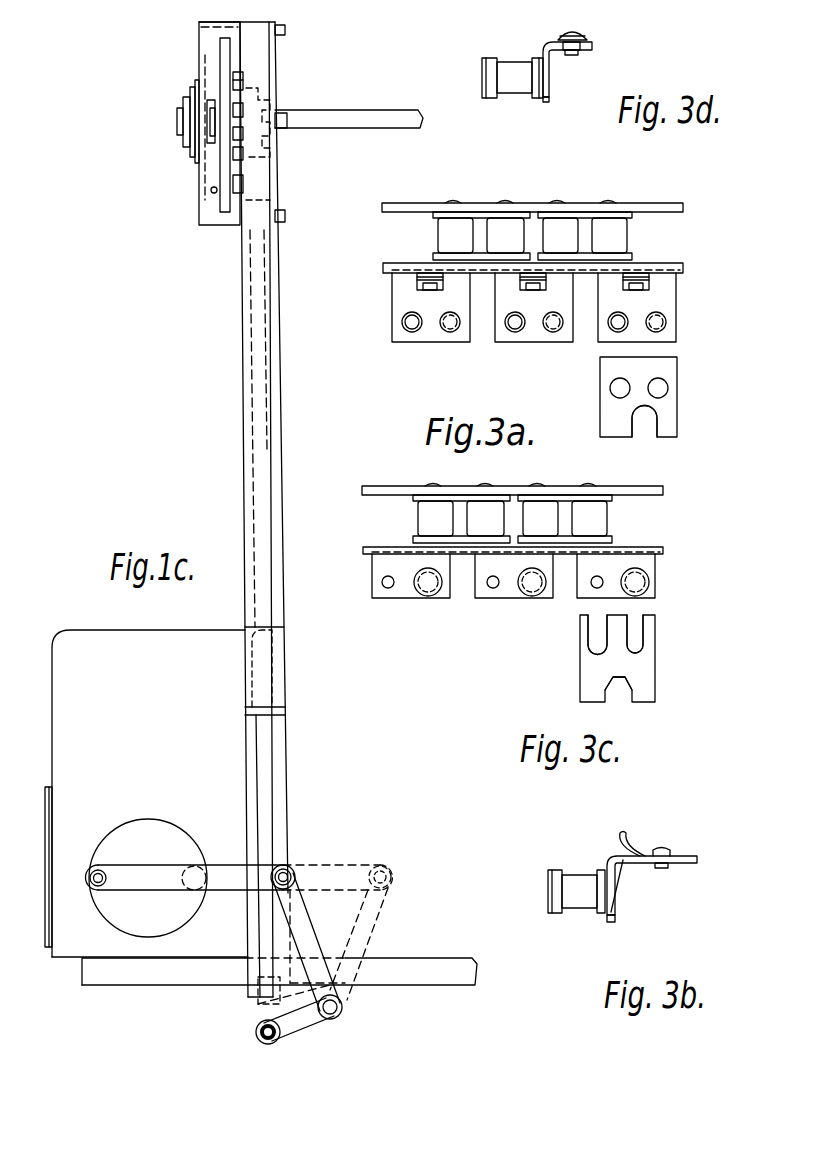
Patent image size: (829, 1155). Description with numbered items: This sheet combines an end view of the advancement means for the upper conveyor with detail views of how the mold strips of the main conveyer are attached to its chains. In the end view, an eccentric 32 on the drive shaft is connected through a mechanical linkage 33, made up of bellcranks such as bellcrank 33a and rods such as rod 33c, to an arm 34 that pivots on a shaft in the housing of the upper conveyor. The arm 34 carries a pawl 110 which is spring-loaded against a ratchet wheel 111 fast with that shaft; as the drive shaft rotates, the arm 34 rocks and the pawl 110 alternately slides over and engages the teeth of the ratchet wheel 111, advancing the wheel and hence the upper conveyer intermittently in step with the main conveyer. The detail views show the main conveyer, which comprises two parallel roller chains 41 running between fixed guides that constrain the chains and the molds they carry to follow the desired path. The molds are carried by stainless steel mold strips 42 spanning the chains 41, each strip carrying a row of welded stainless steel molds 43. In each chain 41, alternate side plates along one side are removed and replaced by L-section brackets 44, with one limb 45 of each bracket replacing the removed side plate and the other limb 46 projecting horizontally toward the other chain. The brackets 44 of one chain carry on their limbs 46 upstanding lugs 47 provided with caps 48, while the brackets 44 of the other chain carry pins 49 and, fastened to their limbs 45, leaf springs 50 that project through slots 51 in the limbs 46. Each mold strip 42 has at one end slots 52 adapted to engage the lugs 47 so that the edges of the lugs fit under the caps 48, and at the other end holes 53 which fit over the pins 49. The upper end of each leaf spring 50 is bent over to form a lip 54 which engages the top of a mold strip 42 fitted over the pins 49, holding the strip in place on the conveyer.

In FIG. 1C, the eccentric 32 is at (143, 833).
In FIG. 1C, the mechanical linkage 33 is at (288, 788).
In FIG. 1C, the bellcrank 33a is at (305, 942).
In FIG. 1C, the rod 33c is at (220, 868).
In FIG. 1C, the arm 34 is at (226, 205).
In FIG. 3A, the roller chain 41 is at (622, 203).
In FIG. 3C, the roller chain 41 is at (627, 490).
In FIG. 3D, the roller chain 41 is at (492, 92).
In FIG. 3B, the roller chain 41 is at (556, 913).
In FIG. 3A, the mold strip 42 is at (600, 388).
In FIG. 3C, the mold strip 42 is at (582, 664).
In FIG. 3A, the mold 43 is at (633, 424).
In FIG. 3C, the mold 43 is at (612, 696).
In FIG. 3A, the L-section bracket 44 is at (410, 345).
In FIG. 3C, the L-section bracket 44 is at (428, 600).
In FIG. 3D, the L-section bracket 44 is at (538, 45).
In FIG. 3B, the L-section bracket 44 is at (600, 860).
In FIG. 3D, the limb 45 is at (547, 95).
In FIG. 3B, the limb 45 is at (611, 922).
In FIG. 3A, the limb 46 is at (392, 317).
In FIG. 3C, the limb 46 is at (378, 593).
In FIG. 3D, the limb 46 is at (582, 50).
In FIG. 3B, the limb 46 is at (660, 867).
In FIG. 3C, the upstanding lug 47 is at (436, 592).
In FIG. 3D, the upstanding lug 47 is at (592, 42).
In FIG. 3D, the cap 48 is at (578, 33).
In FIG. 3A, the pin 49 is at (450, 332).
In FIG. 3B, the pin 49 is at (668, 850).
In FIG. 3B, the leaf spring 50 is at (620, 876).
In FIG. 3A, the slot 51 is at (417, 286).
In FIG. 3C, the slot 52 is at (592, 634).
In FIG. 3A, the hole 53 is at (628, 383).
In FIG. 3B, the lip 54 is at (637, 845).
In FIG. 1C, the pawl 110 is at (236, 185).
In FIG. 1C, the ratchet wheel 111 is at (245, 80).